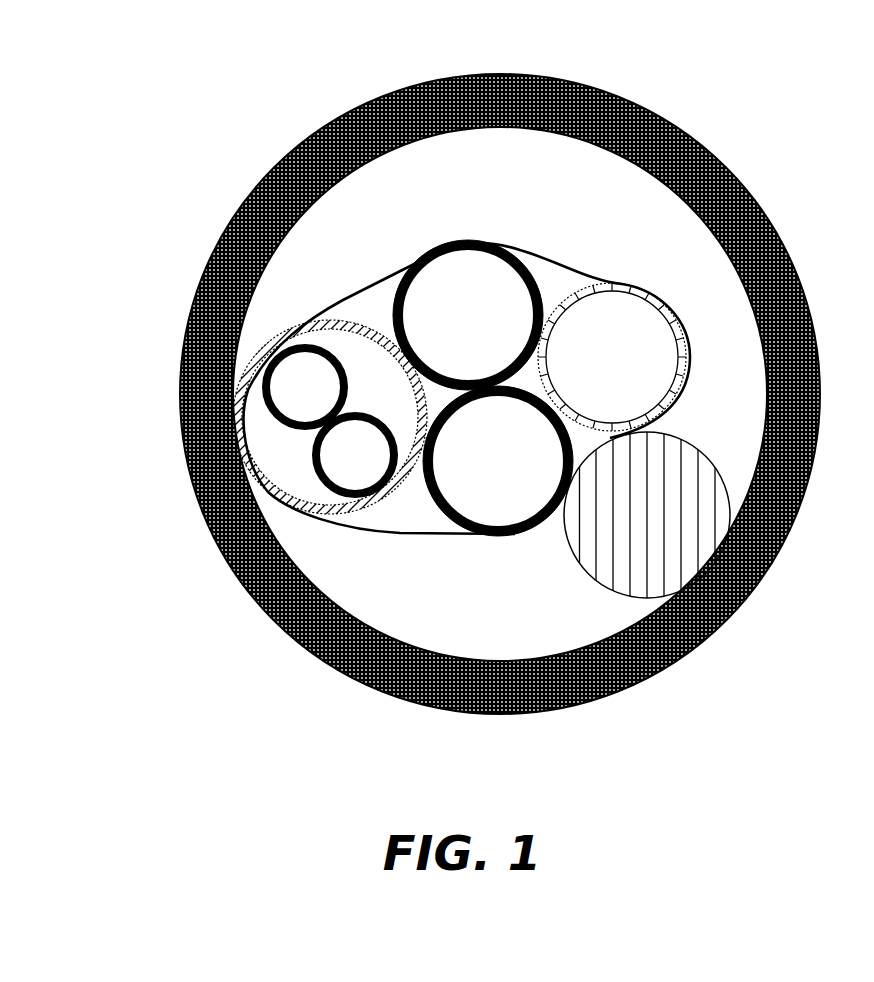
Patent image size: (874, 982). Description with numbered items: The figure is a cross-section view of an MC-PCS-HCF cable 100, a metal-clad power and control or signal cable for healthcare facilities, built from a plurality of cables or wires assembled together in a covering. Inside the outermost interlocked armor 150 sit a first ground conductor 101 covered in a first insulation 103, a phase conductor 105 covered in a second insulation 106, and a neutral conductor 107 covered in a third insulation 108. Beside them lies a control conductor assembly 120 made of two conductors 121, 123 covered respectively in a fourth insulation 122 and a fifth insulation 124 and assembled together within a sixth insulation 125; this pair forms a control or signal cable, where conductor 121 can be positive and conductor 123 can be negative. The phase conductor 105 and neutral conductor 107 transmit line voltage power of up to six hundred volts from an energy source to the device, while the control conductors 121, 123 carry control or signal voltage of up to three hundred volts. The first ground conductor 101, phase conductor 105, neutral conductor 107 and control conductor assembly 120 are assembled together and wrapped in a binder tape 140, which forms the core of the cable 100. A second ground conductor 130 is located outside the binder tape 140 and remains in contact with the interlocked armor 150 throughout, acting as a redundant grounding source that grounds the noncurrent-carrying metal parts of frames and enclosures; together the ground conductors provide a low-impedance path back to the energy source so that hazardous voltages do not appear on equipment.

The MC-PCS-HCF cable 100 is at (745, 150).
The first ground conductor 101 is at (612, 324).
The first insulation 103 is at (605, 285).
The phase conductor 105 is at (457, 291).
The second insulation 106 is at (442, 244).
The neutral conductor 107 is at (498, 481).
The third insulation 108 is at (500, 537).
The control conductor assembly 120 is at (330, 437).
The conductor 121 is at (305, 387).
The fourth insulation 122 is at (262, 405).
The conductor 123 is at (355, 455).
The fifth insulation 124 is at (388, 420).
The sixth insulation 125 is at (330, 397).
The second ground conductor 130 is at (715, 462).
The binder tape 140 is at (373, 281).
The interlocked armor 150 is at (183, 450).